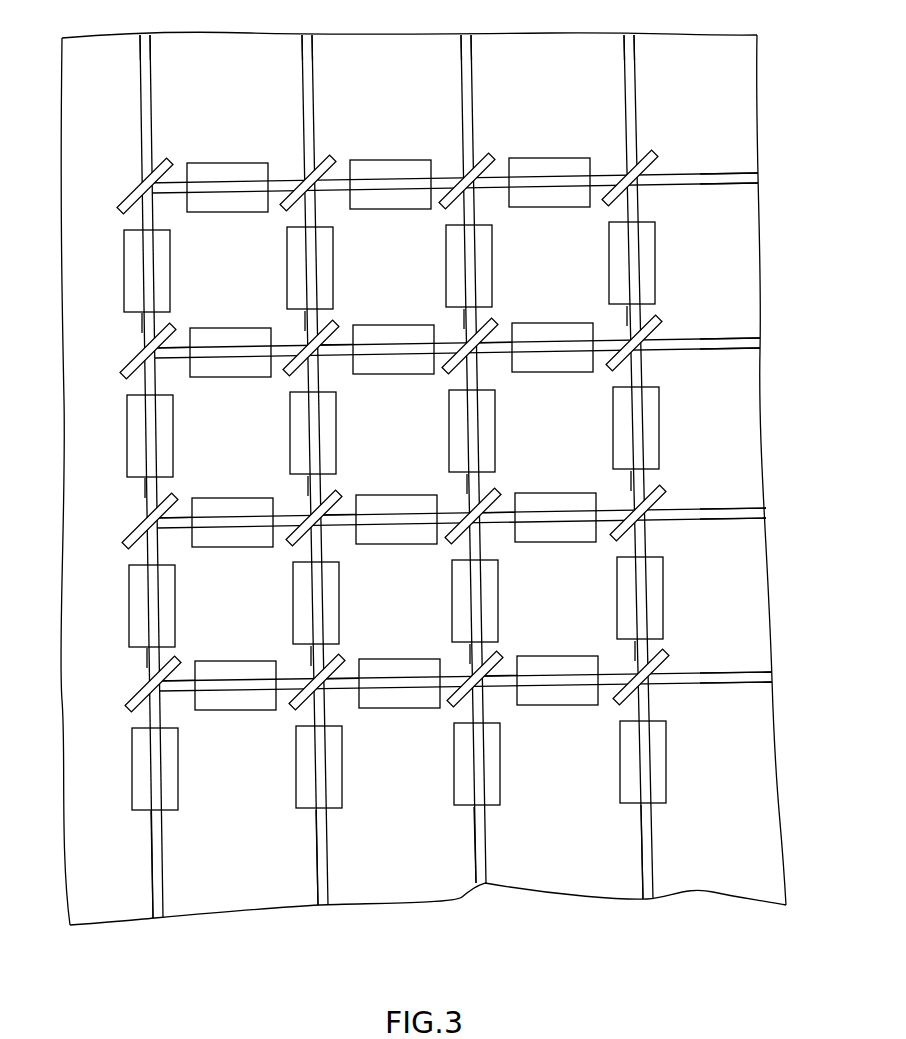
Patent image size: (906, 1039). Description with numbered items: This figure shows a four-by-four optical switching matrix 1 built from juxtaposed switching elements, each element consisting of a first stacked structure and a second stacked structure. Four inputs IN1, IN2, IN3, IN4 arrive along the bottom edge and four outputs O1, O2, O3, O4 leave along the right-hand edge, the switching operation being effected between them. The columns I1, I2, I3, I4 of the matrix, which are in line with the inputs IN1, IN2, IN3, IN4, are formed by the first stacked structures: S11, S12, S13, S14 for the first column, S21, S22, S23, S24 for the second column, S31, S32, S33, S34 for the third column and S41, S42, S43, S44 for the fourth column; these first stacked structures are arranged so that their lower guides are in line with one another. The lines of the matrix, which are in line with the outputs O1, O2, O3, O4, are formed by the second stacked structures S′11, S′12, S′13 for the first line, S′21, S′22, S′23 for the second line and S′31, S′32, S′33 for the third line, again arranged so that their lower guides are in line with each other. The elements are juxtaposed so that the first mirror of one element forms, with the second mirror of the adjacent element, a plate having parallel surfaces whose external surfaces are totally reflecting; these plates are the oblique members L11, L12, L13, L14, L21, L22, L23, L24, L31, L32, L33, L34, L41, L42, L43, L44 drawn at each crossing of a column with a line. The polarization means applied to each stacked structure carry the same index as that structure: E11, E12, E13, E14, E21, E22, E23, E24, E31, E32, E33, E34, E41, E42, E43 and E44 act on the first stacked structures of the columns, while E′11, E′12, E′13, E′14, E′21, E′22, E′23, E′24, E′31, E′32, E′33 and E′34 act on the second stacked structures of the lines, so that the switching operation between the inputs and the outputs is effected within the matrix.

The substrate 1 is at (97, 900).
The input waveguide 1 I1 is at (146, 30).
The input waveguide 2 I2 is at (307, 30).
The input waveguide 3 I3 is at (468, 30).
The input waveguide 4 I4 is at (629, 30).
The output O1 is at (753, 677).
The output O2 is at (747, 515).
The output O3 is at (744, 341).
The output O4 is at (744, 177).
The input IN1 is at (162, 921).
The input IN2 is at (323, 908).
The input IN3 is at (485, 886).
The input IN4 is at (647, 902).
The plate having parallel surfaces L11 is at (142, 688).
The plate having parallel surfaces L12 is at (139, 525).
The plate having parallel surfaces L13 is at (137, 355).
The plate having parallel surfaces L14 is at (132, 185).
The plate having parallel surfaces L21 is at (295, 701).
The plate having parallel surfaces L22 is at (292, 537).
The plate having parallel surfaces L23 is at (289, 367).
The plate having parallel surfaces L24 is at (286, 202).
The plate having parallel surfaces L31 is at (453, 698).
The plate having parallel surfaces L32 is at (451, 535).
The plate having parallel surfaces L33 is at (448, 365).
The plate having parallel surfaces L34 is at (445, 200).
The plate having parallel surfaces L41 is at (619, 696).
The plate having parallel surfaces L42 is at (616, 532).
The plate having parallel surfaces L43 is at (612, 362).
The plate having parallel surfaces L44 is at (608, 197).
The polarization means E11 is at (137, 747).
The polarization means E12 is at (134, 584).
The polarization means E13 is at (132, 414).
The polarization means E14 is at (129, 249).
The polarization means E21 is at (302, 753).
The polarization means E22 is at (299, 589).
The polarization means E23 is at (296, 419).
The polarization means E24 is at (293, 254).
The polarization means E31 is at (460, 750).
The polarization means E32 is at (458, 587).
The polarization means E33 is at (455, 417).
The polarization means E34 is at (452, 252).
The polarization means E41 is at (626, 748).
The polarization means E42 is at (623, 584).
The polarization means E43 is at (619, 414).
The polarization means E44 is at (615, 249).
The polarization means E′11 is at (205, 715).
The polarization means E′12 is at (202, 552).
The polarization means E′13 is at (200, 382).
The polarization means E′14 is at (197, 217).
The polarization means E′21 is at (369, 713).
The polarization means E′22 is at (366, 549).
The polarization means E′23 is at (363, 379).
The polarization means E′24 is at (360, 214).
The polarization means E′31 is at (527, 710).
The polarization means E′32 is at (525, 547).
The polarization means E′33 is at (522, 377).
The polarization means E′34 is at (519, 212).
The first stacked structure S11 is at (155, 845).
The first stacked structure S12 is at (141, 655).
The first stacked structure S13 is at (139, 485).
The first stacked structure S14 is at (136, 320).
The first stacked structure S21 is at (312, 834).
The first stacked structure S22 is at (314, 622).
The first stacked structure S23 is at (311, 452).
The first stacked structure S24 is at (308, 287).
The first stacked structure S31 is at (470, 831).
The first stacked structure S32 is at (473, 620).
The first stacked structure S33 is at (470, 450).
The first stacked structure S34 is at (467, 285).
The first stacked structure S41 is at (636, 829).
The first stacked structure S42 is at (638, 617).
The first stacked structure S43 is at (634, 447).
The first stacked structure S44 is at (630, 282).
The second stacked structure S′11 is at (227, 686).
The second stacked structure S′12 is at (225, 516).
The second stacked structure S′13 is at (222, 351).
The second stacked structure S′21 is at (391, 683).
The second stacked structure S′22 is at (388, 513).
The second stacked structure S′23 is at (385, 348).
The second stacked structure S′31 is at (550, 681).
The second stacked structure S′32 is at (547, 511).
The second stacked structure S′33 is at (544, 346).